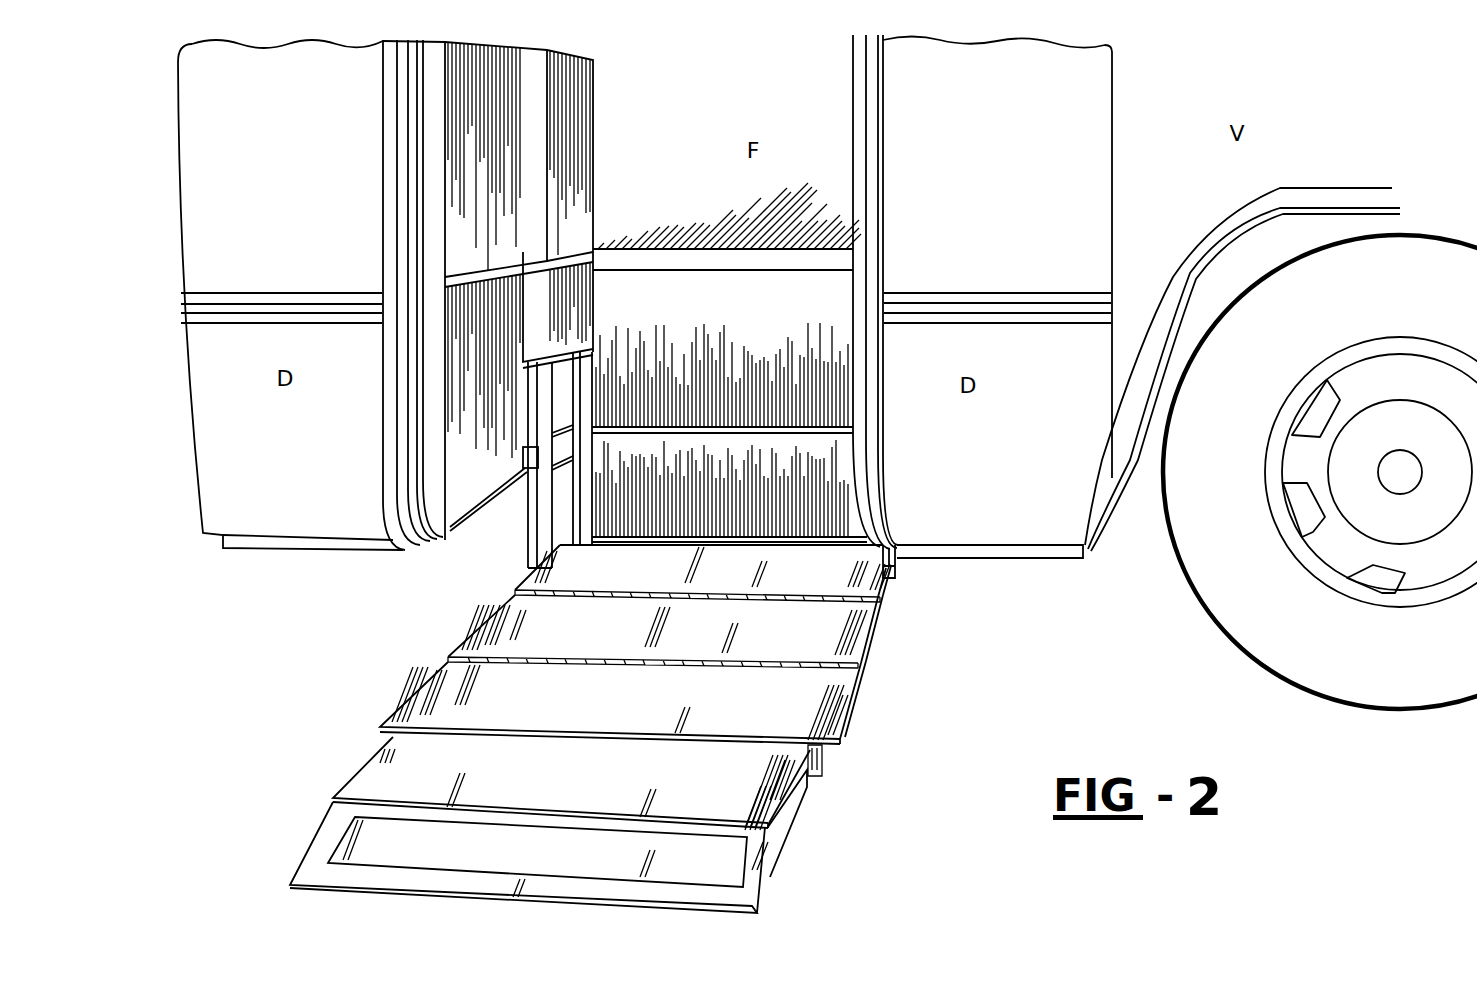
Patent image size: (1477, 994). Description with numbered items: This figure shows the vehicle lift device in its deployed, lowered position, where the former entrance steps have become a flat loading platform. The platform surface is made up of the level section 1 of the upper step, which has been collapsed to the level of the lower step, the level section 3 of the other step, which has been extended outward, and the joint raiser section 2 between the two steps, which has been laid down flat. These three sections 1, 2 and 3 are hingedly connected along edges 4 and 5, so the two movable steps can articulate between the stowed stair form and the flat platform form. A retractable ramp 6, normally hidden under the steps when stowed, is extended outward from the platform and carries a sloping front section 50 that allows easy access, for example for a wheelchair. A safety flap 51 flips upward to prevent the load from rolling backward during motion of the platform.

The level section of step B 1 is at (873, 583).
The joint raiser section 2 is at (853, 640).
The level section of step M 3 is at (837, 705).
The hinged edge 4 is at (880, 599).
The hinged edge 5 is at (450, 652).
The retractable ramp 6 is at (380, 755).
The sloping front section 50 is at (323, 843).
The safety flap 51 is at (497, 863).